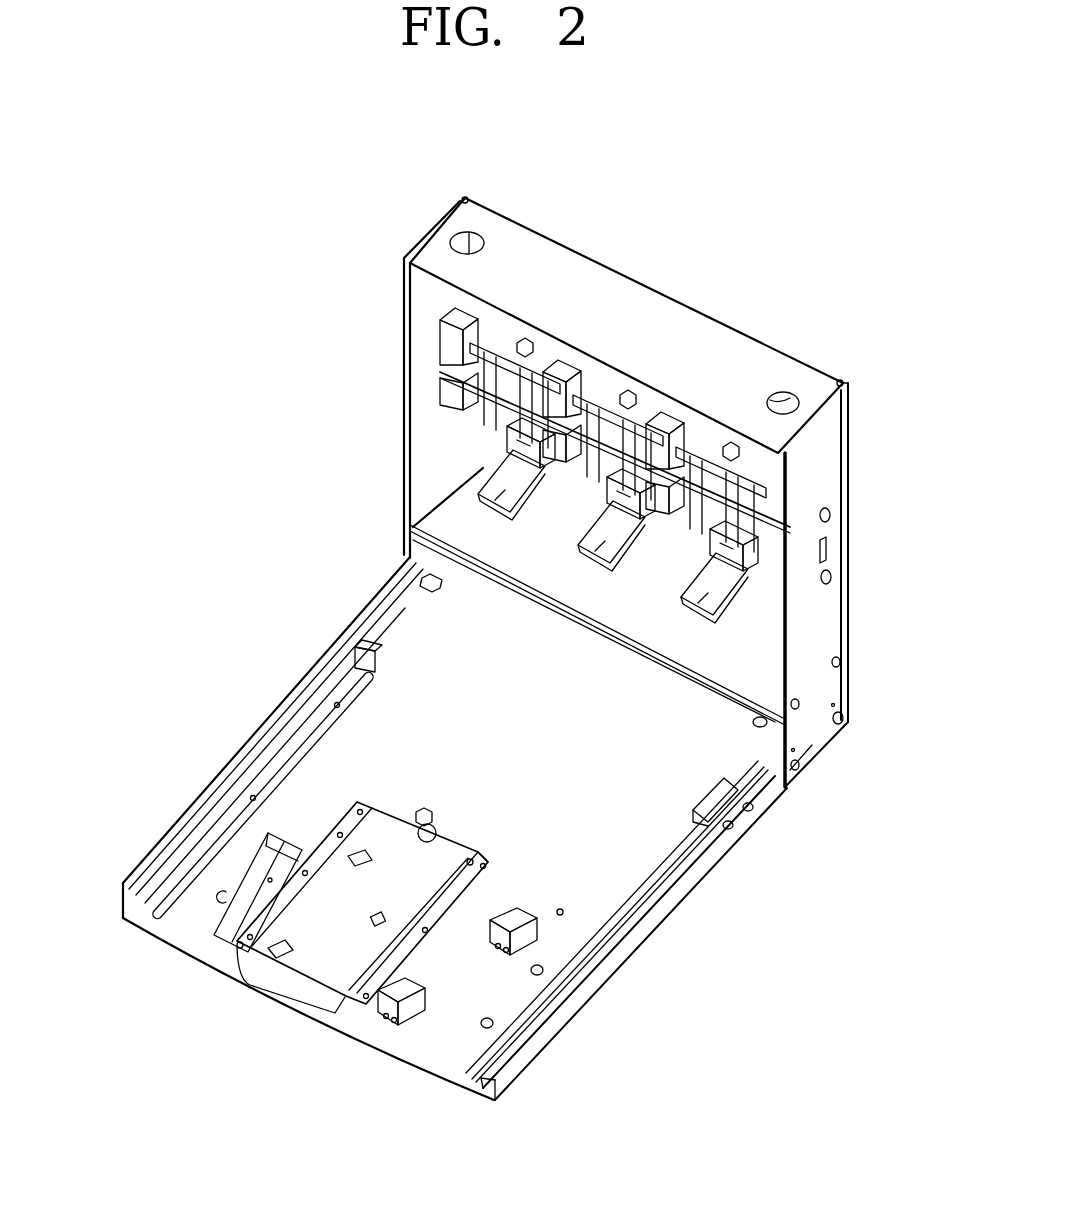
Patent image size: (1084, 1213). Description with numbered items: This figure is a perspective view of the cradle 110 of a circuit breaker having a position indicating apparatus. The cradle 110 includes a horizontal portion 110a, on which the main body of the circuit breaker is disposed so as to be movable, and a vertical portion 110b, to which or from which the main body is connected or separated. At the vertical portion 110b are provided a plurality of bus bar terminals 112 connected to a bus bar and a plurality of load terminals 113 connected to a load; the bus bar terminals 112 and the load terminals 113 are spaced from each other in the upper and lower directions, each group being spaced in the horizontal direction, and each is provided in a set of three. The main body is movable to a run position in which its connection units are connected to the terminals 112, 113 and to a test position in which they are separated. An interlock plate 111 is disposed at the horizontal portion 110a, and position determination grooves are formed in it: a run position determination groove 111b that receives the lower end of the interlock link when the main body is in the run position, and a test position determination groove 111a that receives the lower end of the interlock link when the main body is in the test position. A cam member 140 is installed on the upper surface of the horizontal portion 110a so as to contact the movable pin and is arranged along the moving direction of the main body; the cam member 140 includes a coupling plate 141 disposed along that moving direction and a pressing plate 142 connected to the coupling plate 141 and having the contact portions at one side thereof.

The cradle 110 is at (298, 388).
The horizontal portion 110a is at (637, 930).
The vertical portion 110b is at (830, 605).
The interlock plate 111 is at (320, 970).
The test position determination groove 111a is at (277, 948).
The run position determination groove 111b is at (360, 862).
The bus bar terminal 112 is at (505, 375).
The load terminal 113 is at (727, 573).
The cam member 140 is at (243, 867).
The coupling plate 141 is at (232, 957).
The pressing plate 142 is at (222, 915).